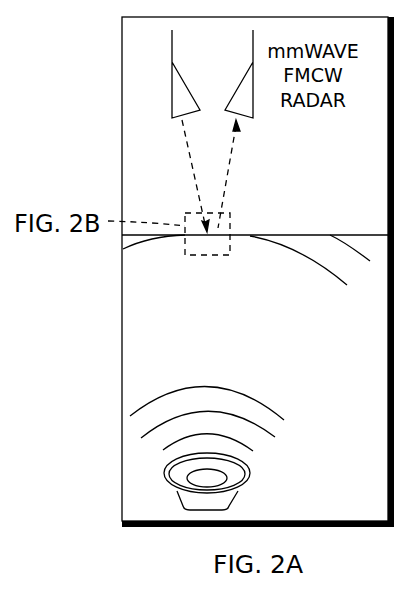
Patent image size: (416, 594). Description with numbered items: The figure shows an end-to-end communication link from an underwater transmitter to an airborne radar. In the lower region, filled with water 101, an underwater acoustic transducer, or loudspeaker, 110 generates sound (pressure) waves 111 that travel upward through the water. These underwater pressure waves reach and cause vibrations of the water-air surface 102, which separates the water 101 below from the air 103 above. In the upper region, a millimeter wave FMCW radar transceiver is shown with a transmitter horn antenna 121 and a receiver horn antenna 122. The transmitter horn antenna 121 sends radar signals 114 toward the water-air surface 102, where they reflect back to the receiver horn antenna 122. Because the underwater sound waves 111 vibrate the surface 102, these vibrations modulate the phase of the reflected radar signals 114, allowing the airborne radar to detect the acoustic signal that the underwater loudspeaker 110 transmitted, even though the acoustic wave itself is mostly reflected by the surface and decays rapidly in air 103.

The water 101 is at (249, 329).
The water-air surface 102 is at (322, 235).
The air 103 is at (154, 179).
The underwater acoustic transducer 110 is at (170, 477).
The sound waves 111 is at (158, 397).
The radar signals 114 is at (231, 168).
The transmitter horn antenna 121 is at (172, 90).
The receiver horn antenna 122 is at (253, 105).